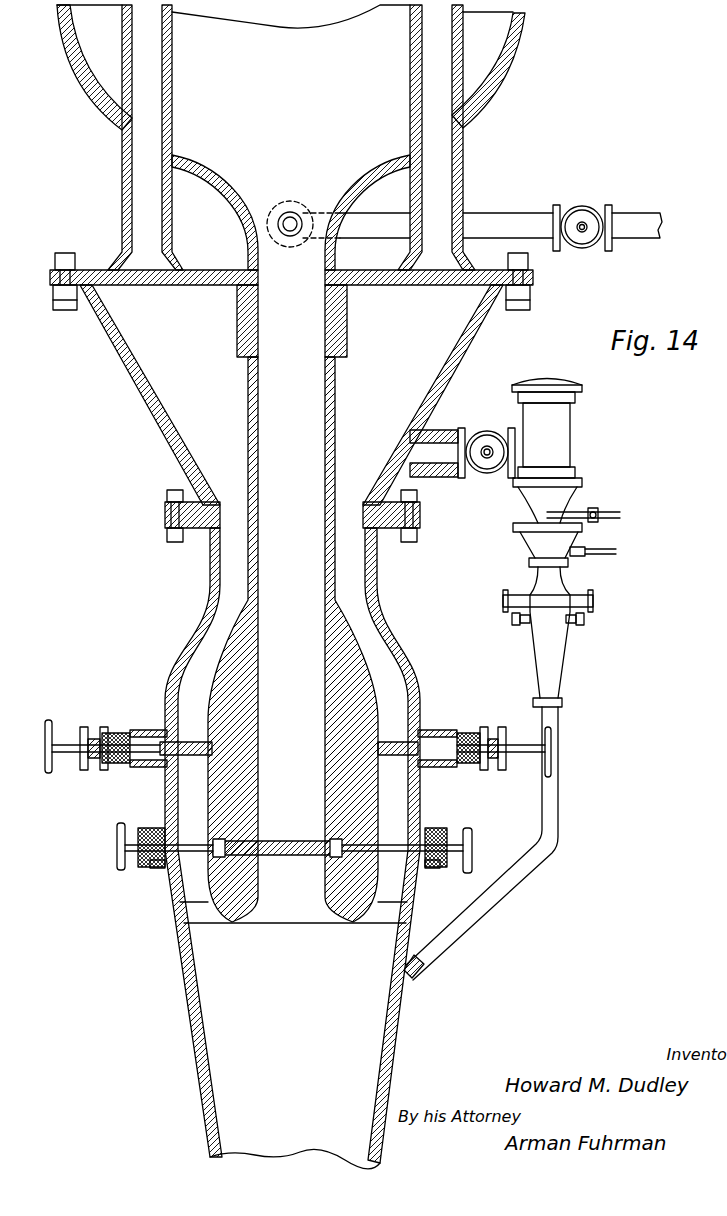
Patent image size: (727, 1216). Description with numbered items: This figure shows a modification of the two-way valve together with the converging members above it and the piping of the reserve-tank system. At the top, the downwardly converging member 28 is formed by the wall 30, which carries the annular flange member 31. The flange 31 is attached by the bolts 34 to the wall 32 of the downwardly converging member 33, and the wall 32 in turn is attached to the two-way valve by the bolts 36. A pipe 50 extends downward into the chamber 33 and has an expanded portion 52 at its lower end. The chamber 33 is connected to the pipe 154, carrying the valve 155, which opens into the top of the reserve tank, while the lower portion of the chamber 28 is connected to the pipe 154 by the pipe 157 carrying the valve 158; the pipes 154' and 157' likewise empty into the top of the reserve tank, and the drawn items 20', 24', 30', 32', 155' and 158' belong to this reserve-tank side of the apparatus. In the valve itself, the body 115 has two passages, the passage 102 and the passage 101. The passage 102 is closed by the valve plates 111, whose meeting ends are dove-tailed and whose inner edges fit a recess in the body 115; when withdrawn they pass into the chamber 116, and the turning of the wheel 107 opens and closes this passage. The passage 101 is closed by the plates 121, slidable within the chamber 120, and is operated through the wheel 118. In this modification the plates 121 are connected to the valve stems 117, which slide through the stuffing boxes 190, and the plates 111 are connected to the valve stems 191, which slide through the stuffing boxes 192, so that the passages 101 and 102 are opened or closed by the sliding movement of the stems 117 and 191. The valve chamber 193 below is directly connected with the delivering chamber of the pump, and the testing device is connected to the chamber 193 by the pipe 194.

The downwardly converging member 28 is at (233, 137).
The wall 30 is at (502, 70).
The pipe 50 is at (463, 178).
The pipe 157 is at (464, 215).
The valve 158 is at (583, 213).
The annular flange member 31 is at (100, 269).
The expanded portion 52 is at (177, 258).
The bolts 34 is at (65, 310).
The downwardly converging member 33 is at (163, 337).
The wall 32 is at (291, 395).
The bolts 36 is at (173, 543).
The passage 101 is at (310, 600).
The passage 102 is at (396, 652).
The valve chamber 193 is at (293, 1035).
The plates 121 is at (310, 870).
The pipe 154 is at (452, 435).
The valve 155 is at (490, 465).
The cylinder 20' is at (565, 439).
The cap 24' is at (547, 372).
The venturi throat 30' is at (532, 509).
The pipe 157' is at (600, 503).
The small valve 158' is at (605, 502).
The conical section 32' is at (542, 619).
The small valve 155' is at (590, 565).
The pipe 154' is at (616, 564).
The pipe 194 is at (558, 813).
The valve plates 111 is at (184, 742).
The chamber 116 is at (140, 730).
The stuffing boxes 192 is at (116, 732).
The valve stems 191 is at (88, 738).
The wheel 107 is at (48, 720).
The body 115 is at (208, 785).
The chamber 120 is at (213, 842).
The valve stems 117 is at (150, 829).
The wheel 118 is at (117, 856).
The stuffing boxes 190 is at (156, 868).